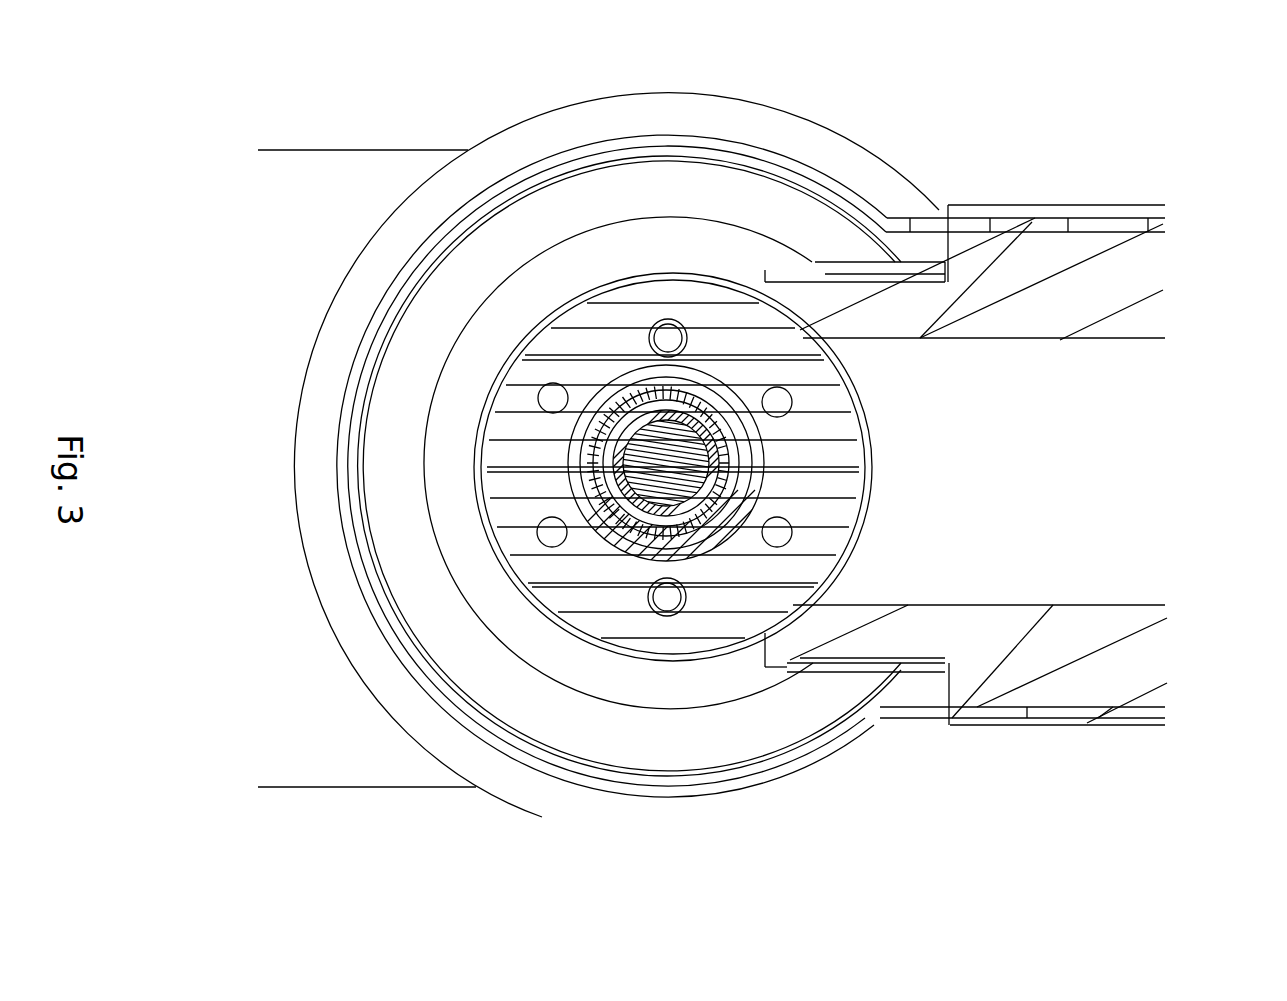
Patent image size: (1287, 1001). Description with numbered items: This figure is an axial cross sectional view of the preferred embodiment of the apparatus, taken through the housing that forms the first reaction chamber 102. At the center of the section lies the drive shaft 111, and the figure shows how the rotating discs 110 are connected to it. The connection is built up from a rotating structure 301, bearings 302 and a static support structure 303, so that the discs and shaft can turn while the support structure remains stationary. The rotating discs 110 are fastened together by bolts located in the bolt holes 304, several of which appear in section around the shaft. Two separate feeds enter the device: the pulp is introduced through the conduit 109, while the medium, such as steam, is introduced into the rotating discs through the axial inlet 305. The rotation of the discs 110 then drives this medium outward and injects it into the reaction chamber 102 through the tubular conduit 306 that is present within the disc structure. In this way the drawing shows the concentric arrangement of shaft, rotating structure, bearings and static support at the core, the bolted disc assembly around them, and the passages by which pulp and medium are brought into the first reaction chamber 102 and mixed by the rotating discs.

The first reaction chamber 102 is at (1178, 163).
The conduit 109 is at (1122, 457).
The rotating discs 110 is at (808, 430).
The drive shaft 111 is at (650, 463).
The rotating structure 301 is at (590, 540).
The bearings 302 is at (643, 527).
The static support structure 303 is at (648, 552).
The bolt holes 304 is at (780, 532).
The axial inlet 305 is at (677, 565).
The tubular conduit 306 is at (825, 500).